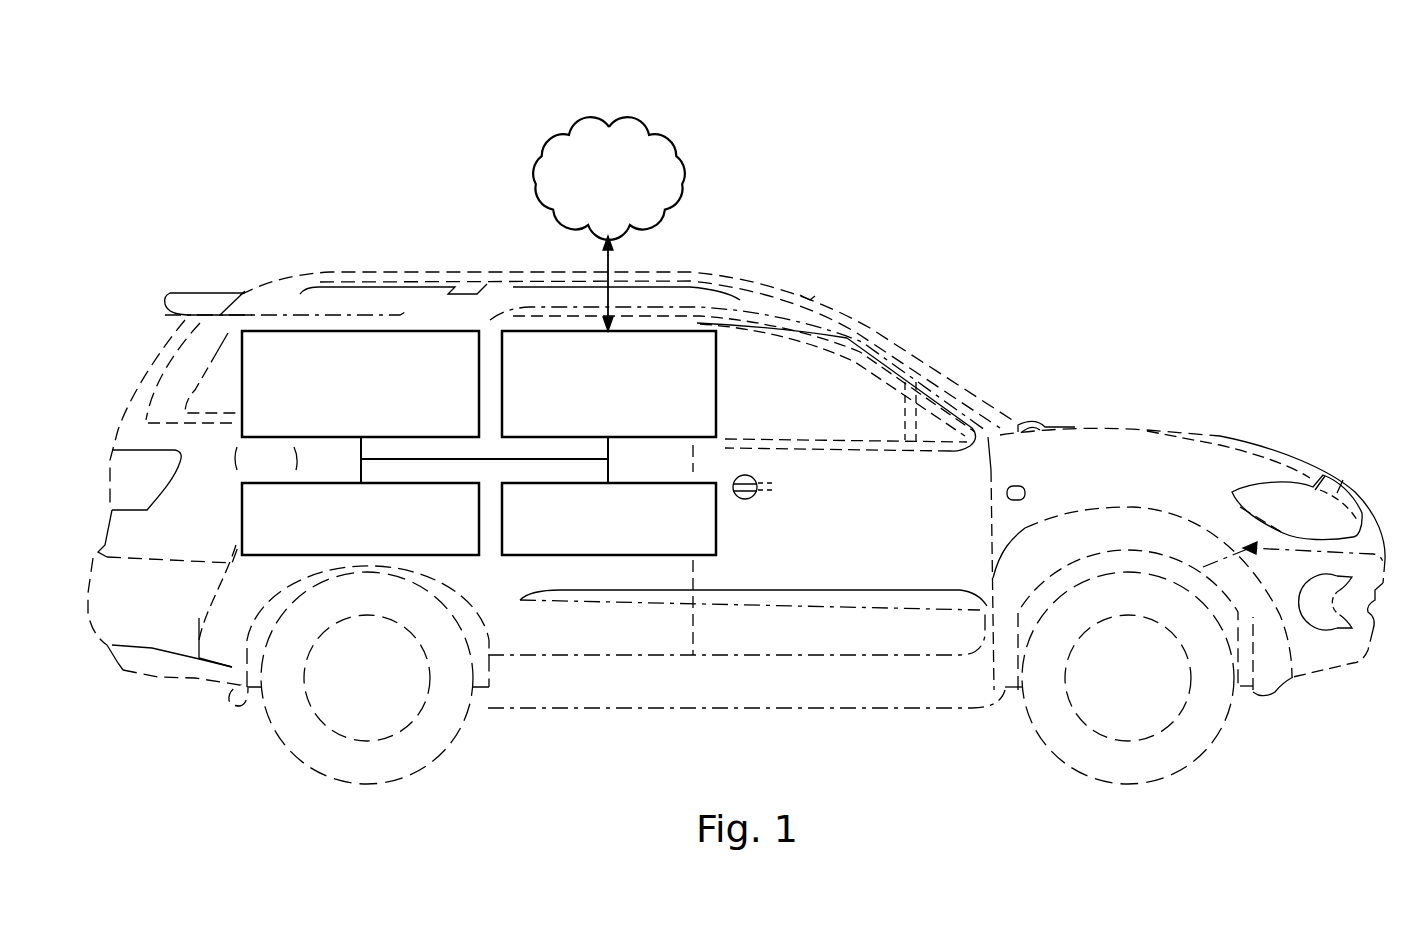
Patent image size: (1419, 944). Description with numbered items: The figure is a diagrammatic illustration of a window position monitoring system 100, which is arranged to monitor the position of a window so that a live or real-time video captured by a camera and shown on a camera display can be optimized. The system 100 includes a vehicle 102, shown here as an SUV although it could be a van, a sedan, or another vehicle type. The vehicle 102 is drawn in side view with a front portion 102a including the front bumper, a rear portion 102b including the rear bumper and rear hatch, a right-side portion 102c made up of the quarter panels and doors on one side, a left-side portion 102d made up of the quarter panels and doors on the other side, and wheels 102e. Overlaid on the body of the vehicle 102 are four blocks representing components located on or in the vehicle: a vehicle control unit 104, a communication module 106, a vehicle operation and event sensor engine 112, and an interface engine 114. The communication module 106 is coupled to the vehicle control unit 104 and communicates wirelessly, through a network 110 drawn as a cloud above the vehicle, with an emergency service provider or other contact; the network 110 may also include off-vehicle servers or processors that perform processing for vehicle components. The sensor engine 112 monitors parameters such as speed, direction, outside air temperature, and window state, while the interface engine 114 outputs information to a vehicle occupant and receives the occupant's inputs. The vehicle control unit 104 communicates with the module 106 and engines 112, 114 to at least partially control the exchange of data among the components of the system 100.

The window position monitoring system 100 is at (1000, 105).
The vehicle 102 is at (866, 552).
The front portion 102a is at (1354, 452).
The rear portion 102b is at (152, 272).
The right-side portion 102c is at (901, 662).
The left-side portion 102d is at (976, 334).
The wheels 102e is at (314, 790).
The vehicle control unit 104 is at (716, 520).
The communication module 106 is at (716, 383).
The network 110 is at (574, 121).
The vehicle operation and event sensor engine 112 is at (242, 380).
The interface engine 114 is at (242, 520).